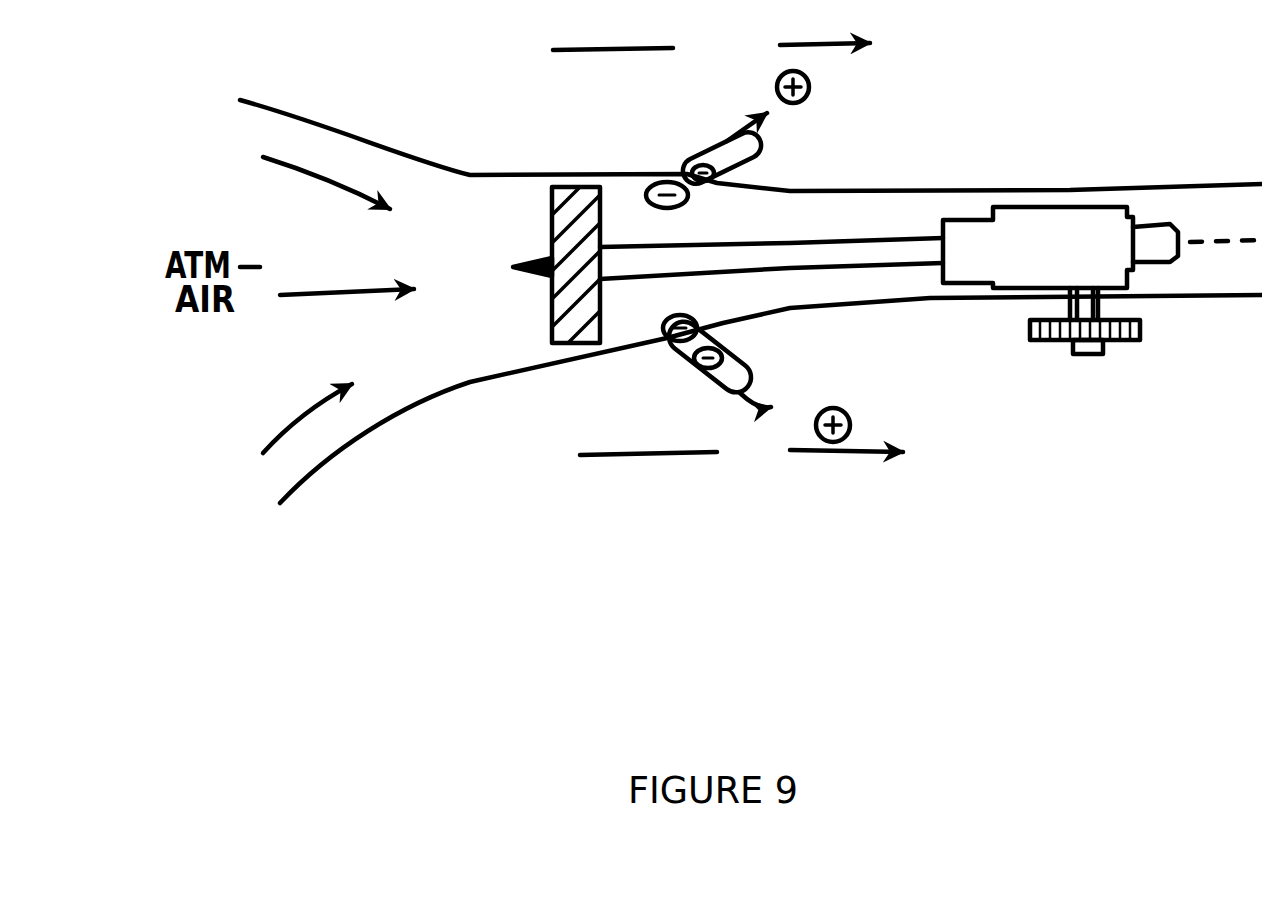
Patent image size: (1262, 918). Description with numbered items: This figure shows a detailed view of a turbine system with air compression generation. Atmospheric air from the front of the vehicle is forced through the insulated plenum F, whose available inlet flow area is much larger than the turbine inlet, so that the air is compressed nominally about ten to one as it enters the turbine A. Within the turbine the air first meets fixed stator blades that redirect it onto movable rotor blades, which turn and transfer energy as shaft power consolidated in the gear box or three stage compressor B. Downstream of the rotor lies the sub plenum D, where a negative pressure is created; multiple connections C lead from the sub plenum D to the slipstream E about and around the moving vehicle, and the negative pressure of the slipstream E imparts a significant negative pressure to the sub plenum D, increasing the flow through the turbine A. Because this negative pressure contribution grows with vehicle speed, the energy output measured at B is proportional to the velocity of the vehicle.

The turbine A is at (600, 305).
The gear box or three stage compressor B is at (1102, 280).
The slots C is at (712, 260).
The sub plenum D is at (771, 258).
The slipstream E is at (728, 251).
The insulated plenum F is at (436, 158).